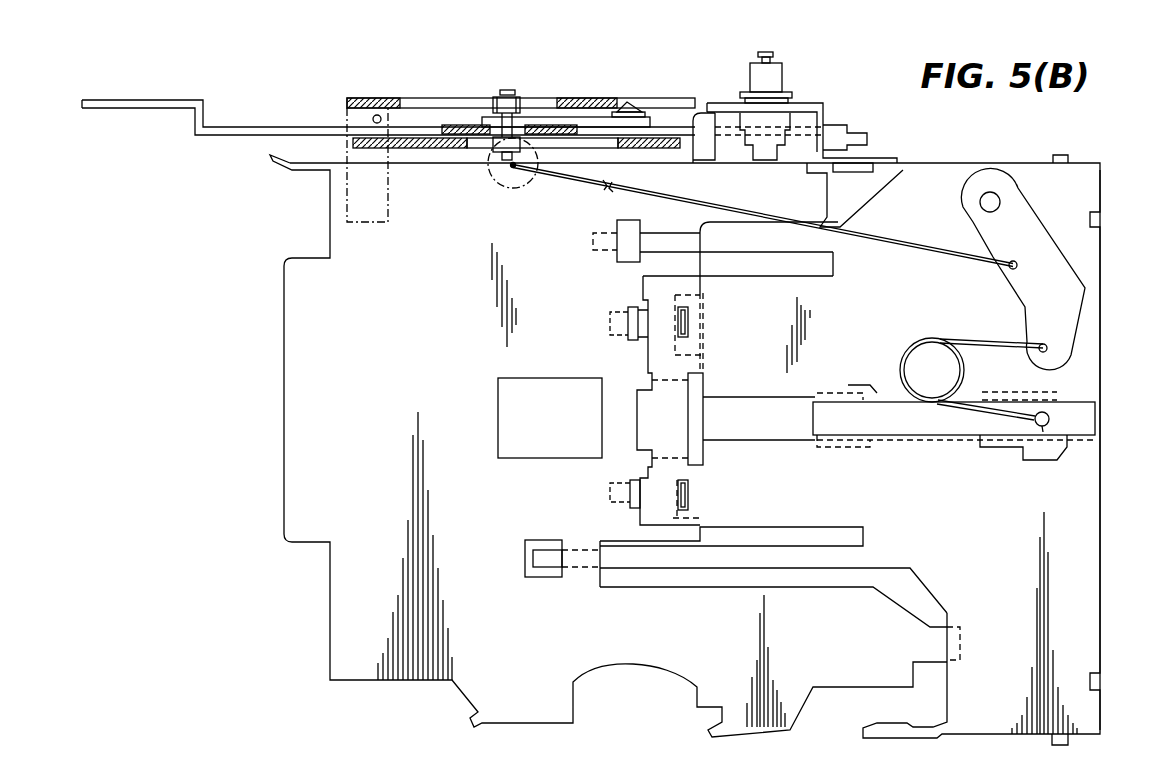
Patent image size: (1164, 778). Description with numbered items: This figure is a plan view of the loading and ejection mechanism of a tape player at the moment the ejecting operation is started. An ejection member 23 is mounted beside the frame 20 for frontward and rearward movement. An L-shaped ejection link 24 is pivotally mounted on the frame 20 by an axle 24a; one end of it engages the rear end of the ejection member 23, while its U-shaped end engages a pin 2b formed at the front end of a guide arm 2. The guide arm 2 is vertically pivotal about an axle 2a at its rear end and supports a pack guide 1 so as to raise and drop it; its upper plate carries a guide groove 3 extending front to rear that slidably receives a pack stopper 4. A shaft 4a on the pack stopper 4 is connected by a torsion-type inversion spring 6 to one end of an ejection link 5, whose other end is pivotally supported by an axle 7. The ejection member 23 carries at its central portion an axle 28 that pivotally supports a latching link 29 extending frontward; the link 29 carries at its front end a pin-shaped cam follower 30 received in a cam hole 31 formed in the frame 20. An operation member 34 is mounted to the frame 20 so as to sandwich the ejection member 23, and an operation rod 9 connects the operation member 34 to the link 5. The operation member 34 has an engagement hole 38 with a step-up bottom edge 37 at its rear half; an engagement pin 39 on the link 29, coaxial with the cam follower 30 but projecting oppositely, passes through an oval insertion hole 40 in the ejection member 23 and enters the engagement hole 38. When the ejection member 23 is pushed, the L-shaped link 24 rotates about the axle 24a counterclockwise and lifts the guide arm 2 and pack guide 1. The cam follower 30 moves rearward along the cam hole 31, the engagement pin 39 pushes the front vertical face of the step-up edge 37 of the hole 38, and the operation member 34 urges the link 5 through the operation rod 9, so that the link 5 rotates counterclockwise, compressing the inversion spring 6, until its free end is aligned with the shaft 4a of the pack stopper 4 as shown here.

The pack guide 1 is at (293, 397).
The guide arm 2 is at (1092, 292).
The axle 2a is at (1060, 155).
The pin 2b is at (860, 138).
The guide groove 3 is at (902, 440).
The pack stopper 4 is at (823, 428).
The shaft 4a is at (1038, 424).
The ejection link 5 is at (1040, 242).
The inversion spring 6 is at (917, 358).
The axle 7 is at (1000, 202).
The operation rod 9 is at (903, 245).
The frame 20 is at (627, 102).
The ejection member 23 is at (121, 100).
The L-shaped ejection link 24 is at (823, 107).
The axle 24a is at (773, 82).
The axle 28 is at (600, 110).
The latching link 29 is at (543, 122).
The cam follower 30 is at (497, 95).
The cam hole 31 is at (443, 98).
The operation member 34 is at (703, 140).
The step-up bottom edge 37 is at (480, 148).
The engagement hole 38 is at (575, 142).
The engagement pin 39 is at (505, 152).
The oval insertion hole 40 is at (522, 158).